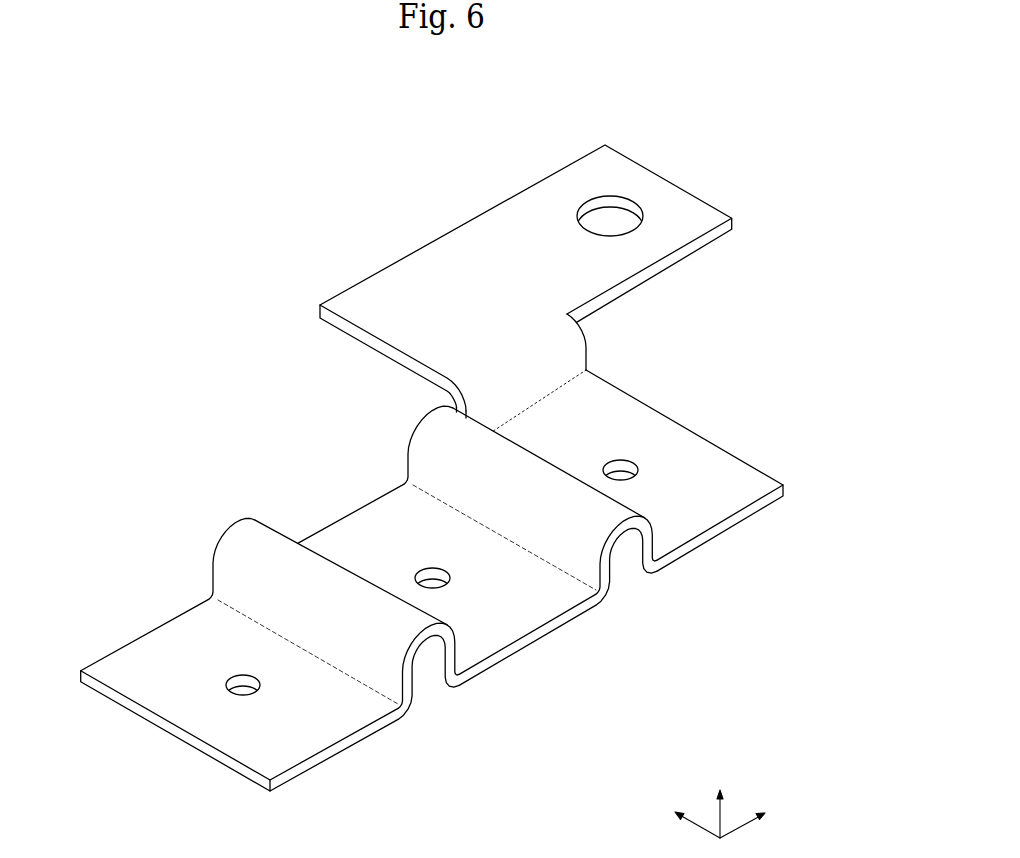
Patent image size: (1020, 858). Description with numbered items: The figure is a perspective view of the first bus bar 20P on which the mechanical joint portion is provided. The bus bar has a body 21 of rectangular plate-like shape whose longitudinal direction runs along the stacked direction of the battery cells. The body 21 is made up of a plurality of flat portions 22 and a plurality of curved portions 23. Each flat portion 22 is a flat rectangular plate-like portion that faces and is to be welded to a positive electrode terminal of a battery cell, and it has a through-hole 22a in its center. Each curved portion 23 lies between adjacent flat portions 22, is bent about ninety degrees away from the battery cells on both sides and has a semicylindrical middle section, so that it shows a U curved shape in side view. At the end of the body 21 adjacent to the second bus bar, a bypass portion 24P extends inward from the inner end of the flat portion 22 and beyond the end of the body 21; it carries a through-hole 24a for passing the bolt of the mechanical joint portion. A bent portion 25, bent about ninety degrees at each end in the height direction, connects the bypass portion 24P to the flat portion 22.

The first bus bar 20P is at (182, 240).
The body 21 is at (152, 625).
The flat portion 22 is at (140, 660).
The through-hole 22a is at (262, 690).
The curved portion 23 is at (245, 538).
The bypass portion 24P is at (470, 262).
The through-hole 24a is at (613, 200).
The bent portion 25 is at (585, 347).